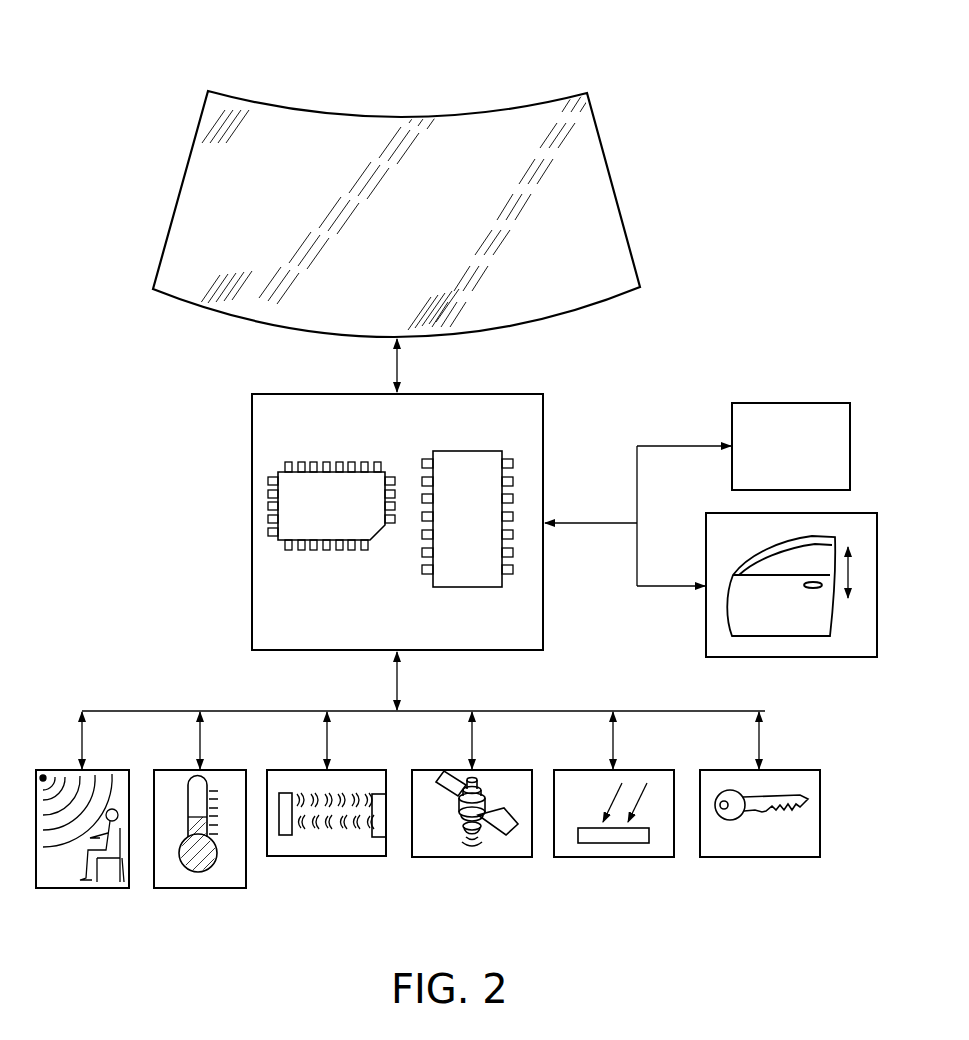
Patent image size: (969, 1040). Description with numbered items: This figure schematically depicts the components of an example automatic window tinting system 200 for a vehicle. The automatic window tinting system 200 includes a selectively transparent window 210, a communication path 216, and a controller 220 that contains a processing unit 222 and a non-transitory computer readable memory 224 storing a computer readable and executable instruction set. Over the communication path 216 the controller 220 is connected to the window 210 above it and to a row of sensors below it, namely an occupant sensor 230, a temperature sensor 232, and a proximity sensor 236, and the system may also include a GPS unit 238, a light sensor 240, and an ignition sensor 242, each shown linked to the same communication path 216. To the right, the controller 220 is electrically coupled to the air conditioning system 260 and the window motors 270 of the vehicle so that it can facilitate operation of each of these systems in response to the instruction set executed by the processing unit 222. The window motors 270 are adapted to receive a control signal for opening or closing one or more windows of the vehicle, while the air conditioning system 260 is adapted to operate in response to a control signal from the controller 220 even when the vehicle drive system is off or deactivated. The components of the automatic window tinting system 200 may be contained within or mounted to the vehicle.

The automatic window tinting system 200 is at (718, 104).
The selectively transparent window 210 is at (618, 198).
The communication path 216 is at (399, 362).
The controller 220 is at (543, 418).
The processing unit 222 is at (322, 470).
The non-transitory computer readable memory 224 is at (513, 568).
The occupant sensor 230 is at (82, 889).
The temperature sensor 232 is at (200, 889).
The proximity sensor 236 is at (327, 857).
The GPS unit 238 is at (472, 857).
The light sensor 240 is at (613, 857).
The ignition sensor 242 is at (759, 857).
The air conditioning system 260 is at (787, 403).
The window motors 270 is at (848, 657).